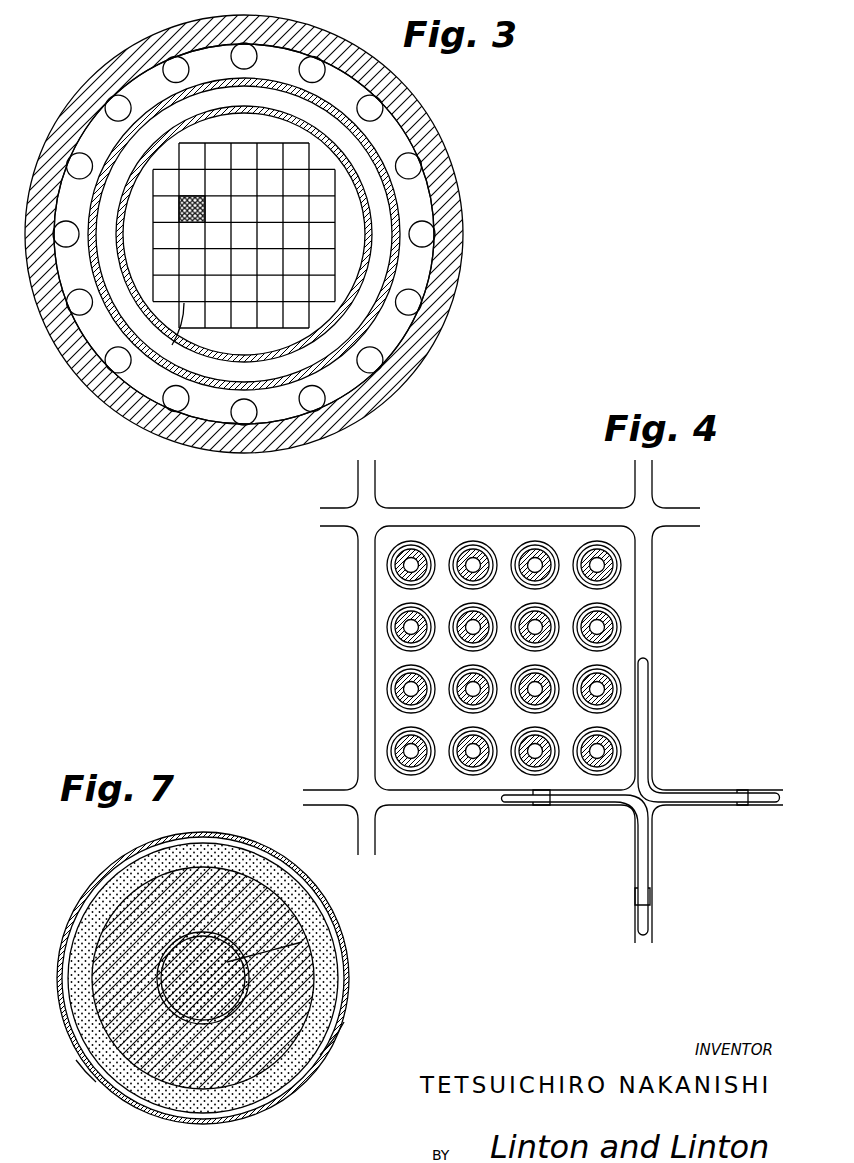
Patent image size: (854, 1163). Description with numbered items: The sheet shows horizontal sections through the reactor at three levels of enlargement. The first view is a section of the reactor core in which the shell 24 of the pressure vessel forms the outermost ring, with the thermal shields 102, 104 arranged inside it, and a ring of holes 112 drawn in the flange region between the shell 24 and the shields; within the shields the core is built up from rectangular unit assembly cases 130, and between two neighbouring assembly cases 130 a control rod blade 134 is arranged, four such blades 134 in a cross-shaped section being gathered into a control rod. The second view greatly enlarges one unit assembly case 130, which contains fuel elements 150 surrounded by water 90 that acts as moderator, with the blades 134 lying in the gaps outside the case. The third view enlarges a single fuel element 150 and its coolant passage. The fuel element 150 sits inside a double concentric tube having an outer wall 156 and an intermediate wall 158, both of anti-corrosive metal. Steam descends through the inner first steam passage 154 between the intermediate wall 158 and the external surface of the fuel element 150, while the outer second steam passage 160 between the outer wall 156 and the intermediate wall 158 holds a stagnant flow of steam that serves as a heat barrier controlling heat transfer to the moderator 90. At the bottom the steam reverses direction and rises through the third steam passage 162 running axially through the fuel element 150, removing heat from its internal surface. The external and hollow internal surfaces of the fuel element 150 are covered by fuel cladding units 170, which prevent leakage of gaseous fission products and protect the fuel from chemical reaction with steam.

In FIG. 3, the shell of the pressure vessel 24 is at (448, 152).
In FIG. 3, the thermal shield 102 is at (145, 100).
In FIG. 3, the thermal shield 104 is at (387, 200).
In FIG. 3, the bolt holes 112 is at (372, 363).
In FIG. 3, the unit assembly case 130 is at (336, 259).
In FIG. 4, the unit assembly case 130 is at (375, 578).
In FIG. 3, the water 90 is at (172, 207).
In FIG. 4, the water 90 is at (385, 655).
In FIG. 3, the control rod blade 134 is at (172, 345).
In FIG. 4, the control rod blade 134 is at (707, 800).
In FIG. 4, the fuel element 150 is at (610, 568).
In FIG. 7, the fuel element 150 is at (233, 887).
In FIG. 4, the inner first steam passage 154 is at (645, 650).
In FIG. 7, the inner first steam passage 154 is at (327, 977).
In FIG. 4, the third steam passage 162 is at (600, 632).
In FIG. 7, the third steam passage 162 is at (333, 898).
In FIG. 4, the outer second steam passage 160 is at (392, 705).
In FIG. 7, the outer second steam passage 160 is at (342, 1023).
In FIG. 7, the fuel cladding unit 170 is at (167, 937).
In FIG. 7, the outer wall 156 is at (97, 1080).
In FIG. 7, the intermediate wall 158 is at (257, 1115).